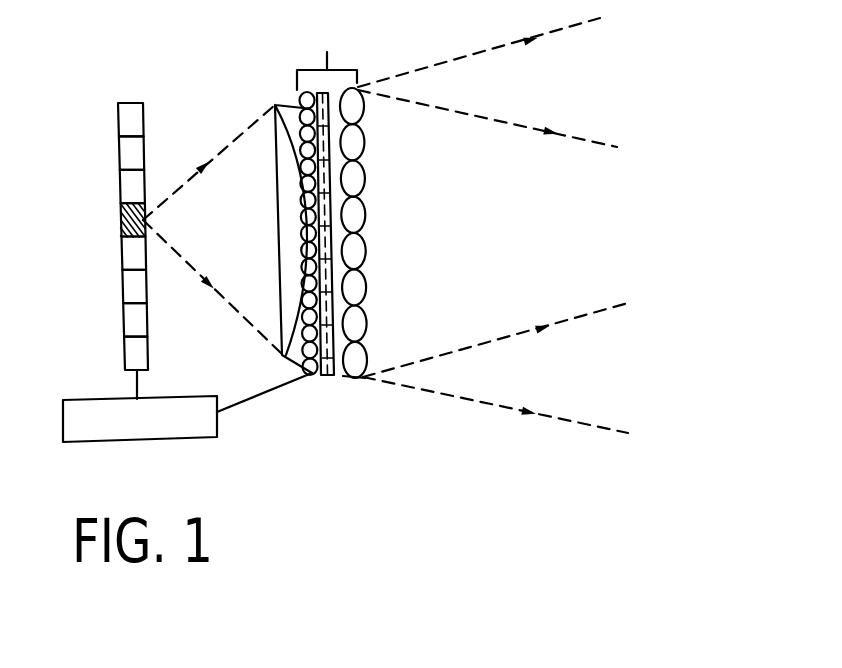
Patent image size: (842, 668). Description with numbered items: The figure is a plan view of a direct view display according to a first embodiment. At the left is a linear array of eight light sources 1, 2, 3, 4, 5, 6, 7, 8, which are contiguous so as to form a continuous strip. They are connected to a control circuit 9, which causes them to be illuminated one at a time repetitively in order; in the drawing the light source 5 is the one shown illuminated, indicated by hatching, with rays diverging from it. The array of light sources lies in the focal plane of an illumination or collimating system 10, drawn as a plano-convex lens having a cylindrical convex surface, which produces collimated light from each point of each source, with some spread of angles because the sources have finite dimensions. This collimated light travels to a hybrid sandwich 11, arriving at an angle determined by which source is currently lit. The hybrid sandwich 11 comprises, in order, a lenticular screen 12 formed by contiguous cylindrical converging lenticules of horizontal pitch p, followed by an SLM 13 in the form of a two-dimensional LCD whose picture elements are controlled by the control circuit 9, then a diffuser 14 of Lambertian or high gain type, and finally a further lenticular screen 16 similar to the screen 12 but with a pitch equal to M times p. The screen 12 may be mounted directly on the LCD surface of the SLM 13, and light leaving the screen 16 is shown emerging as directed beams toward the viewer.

The light source 1 is at (125, 358).
The light source 2 is at (124, 320).
The light source 3 is at (123, 283).
The light source 4 is at (121, 253).
The light source 5 is at (120, 225).
The light source 6 is at (119, 190).
The light source 7 is at (118, 162).
The light source 8 is at (118, 125).
The control circuit 9 is at (110, 443).
The collimating system 10 is at (275, 104).
The hybrid sandwich 11 is at (327, 57).
The lenticular screen 12 is at (315, 376).
The SLM 13 is at (332, 376).
The diffuser 14 is at (343, 376).
The further lenticular screen 16 is at (365, 379).